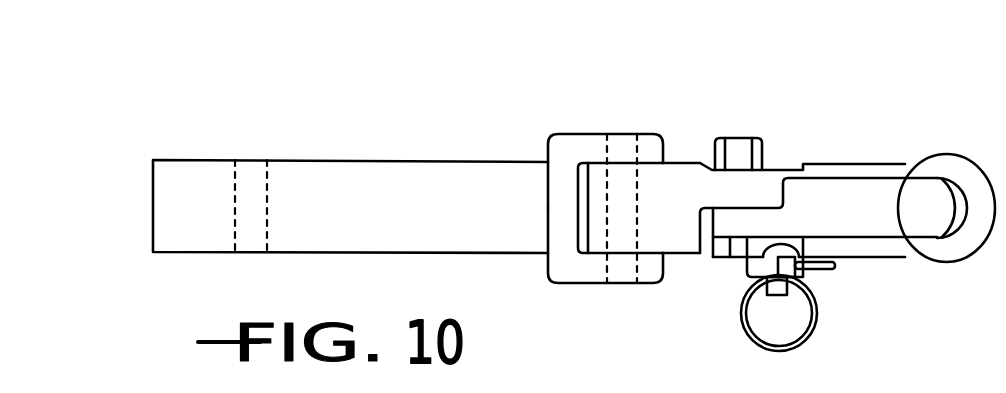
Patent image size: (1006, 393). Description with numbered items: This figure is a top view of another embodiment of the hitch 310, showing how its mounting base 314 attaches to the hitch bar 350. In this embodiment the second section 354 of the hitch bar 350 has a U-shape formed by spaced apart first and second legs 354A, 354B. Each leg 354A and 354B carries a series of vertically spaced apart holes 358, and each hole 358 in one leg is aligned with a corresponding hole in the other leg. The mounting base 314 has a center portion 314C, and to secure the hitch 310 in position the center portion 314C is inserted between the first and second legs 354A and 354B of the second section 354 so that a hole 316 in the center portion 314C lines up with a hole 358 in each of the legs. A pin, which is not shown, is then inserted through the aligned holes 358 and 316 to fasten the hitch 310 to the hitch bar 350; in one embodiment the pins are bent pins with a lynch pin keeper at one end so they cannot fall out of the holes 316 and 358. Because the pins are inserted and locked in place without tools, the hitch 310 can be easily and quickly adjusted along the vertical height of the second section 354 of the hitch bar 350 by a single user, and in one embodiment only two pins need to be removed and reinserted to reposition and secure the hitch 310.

The hitch 310 is at (816, 115).
The hitch bar 350 is at (353, 172).
The second section 354 is at (584, 278).
The first leg 354A is at (582, 277).
The second leg 354B is at (577, 135).
The holes 358 is at (627, 132).
The hole 316 is at (623, 178).
The mounting base 314 is at (676, 250).
The center portion 314C is at (600, 220).